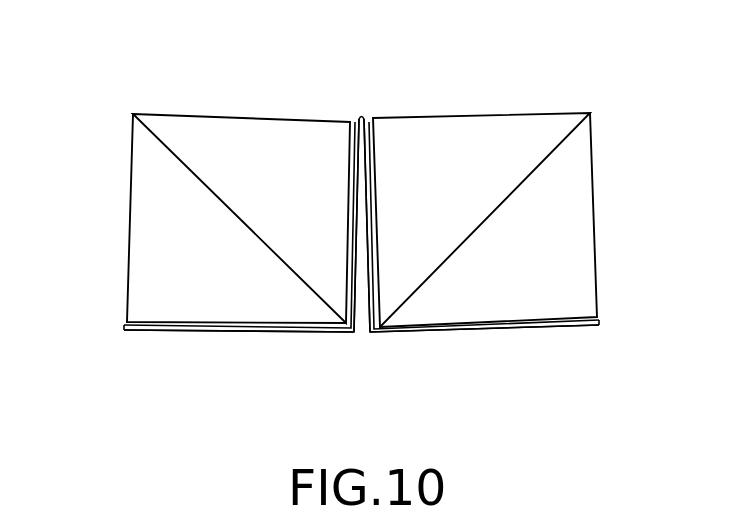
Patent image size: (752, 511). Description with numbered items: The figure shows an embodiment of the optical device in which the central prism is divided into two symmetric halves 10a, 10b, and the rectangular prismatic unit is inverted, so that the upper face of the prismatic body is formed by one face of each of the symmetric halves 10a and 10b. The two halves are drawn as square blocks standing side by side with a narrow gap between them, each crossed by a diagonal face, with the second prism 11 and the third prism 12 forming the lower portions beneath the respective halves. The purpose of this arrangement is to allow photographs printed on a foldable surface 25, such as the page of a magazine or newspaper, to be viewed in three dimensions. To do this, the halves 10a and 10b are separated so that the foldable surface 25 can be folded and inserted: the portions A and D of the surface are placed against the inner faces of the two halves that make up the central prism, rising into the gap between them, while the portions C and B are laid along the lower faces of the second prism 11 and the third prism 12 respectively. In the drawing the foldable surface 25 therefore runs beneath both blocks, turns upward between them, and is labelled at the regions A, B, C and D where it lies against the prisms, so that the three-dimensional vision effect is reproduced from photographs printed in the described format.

The symmetric half of the central prism 10a is at (212, 170).
The symmetric half of the central prism 10b is at (515, 156).
The second prism 11 is at (152, 255).
The third prism 12 is at (565, 267).
The foldable surface 25 is at (170, 330).
The half of the foldable surface A is at (352, 238).
The half of the foldable surface B is at (478, 333).
The half of the foldable surface C is at (255, 333).
The half of the foldable surface D is at (375, 245).